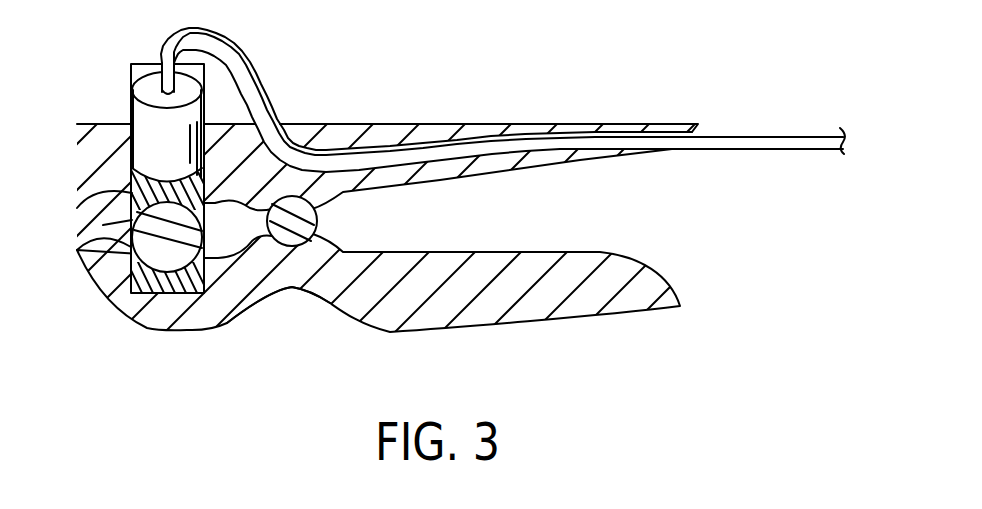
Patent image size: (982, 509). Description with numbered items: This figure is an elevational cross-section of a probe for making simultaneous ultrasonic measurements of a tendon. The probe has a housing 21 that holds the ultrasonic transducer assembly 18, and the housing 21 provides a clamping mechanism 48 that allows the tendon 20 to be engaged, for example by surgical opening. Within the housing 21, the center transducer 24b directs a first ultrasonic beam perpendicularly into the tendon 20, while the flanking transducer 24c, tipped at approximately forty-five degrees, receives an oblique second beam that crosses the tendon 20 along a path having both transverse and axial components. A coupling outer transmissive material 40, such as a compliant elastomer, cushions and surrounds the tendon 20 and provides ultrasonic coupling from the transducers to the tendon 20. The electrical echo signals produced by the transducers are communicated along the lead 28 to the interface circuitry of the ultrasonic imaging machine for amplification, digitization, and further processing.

The ultrasonic transducer assembly 18 is at (265, 66).
The tendon 20 is at (167, 248).
The housing 21 is at (77, 163).
The center transducer 24b is at (147, 63).
The transducer 24c is at (131, 106).
The lead 28 is at (778, 135).
The outer transmissive material 40 is at (77, 208).
The clamping mechanism 48 is at (294, 302).